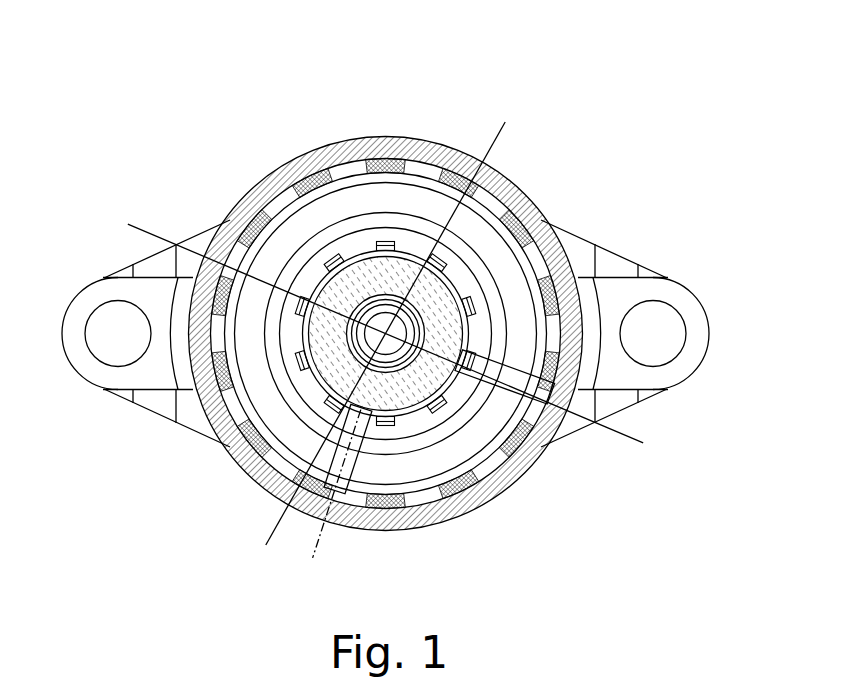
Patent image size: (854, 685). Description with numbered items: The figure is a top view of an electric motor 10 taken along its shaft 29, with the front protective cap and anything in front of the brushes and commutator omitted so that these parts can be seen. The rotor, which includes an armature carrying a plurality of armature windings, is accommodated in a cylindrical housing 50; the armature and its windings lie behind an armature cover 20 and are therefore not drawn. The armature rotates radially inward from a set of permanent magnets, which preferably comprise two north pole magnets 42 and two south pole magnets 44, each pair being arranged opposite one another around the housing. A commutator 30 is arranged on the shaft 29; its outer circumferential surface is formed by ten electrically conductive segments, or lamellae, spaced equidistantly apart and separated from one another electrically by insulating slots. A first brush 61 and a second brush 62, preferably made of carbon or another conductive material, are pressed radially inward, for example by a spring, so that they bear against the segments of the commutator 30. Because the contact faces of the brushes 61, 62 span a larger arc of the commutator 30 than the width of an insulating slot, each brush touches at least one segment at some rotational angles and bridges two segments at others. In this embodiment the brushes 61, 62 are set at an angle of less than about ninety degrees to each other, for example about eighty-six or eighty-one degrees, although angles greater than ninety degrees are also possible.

The electric motor 10 is at (645, 150).
The armature cover 20 is at (495, 262).
The shaft 29 is at (348, 258).
The commutator 30 is at (305, 463).
The north pole magnets 42 is at (310, 177).
The south pole magnets 44 is at (567, 230).
The cylindrical housing 50 is at (412, 137).
The first brush 61 is at (350, 468).
The second brush 62 is at (497, 388).